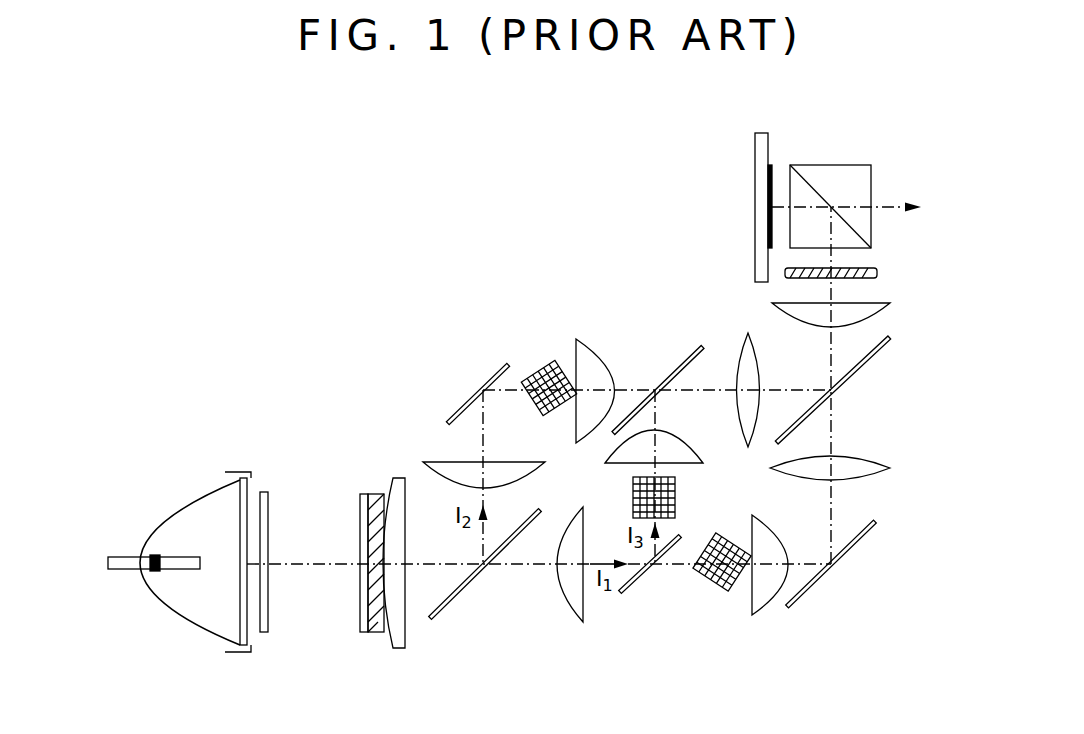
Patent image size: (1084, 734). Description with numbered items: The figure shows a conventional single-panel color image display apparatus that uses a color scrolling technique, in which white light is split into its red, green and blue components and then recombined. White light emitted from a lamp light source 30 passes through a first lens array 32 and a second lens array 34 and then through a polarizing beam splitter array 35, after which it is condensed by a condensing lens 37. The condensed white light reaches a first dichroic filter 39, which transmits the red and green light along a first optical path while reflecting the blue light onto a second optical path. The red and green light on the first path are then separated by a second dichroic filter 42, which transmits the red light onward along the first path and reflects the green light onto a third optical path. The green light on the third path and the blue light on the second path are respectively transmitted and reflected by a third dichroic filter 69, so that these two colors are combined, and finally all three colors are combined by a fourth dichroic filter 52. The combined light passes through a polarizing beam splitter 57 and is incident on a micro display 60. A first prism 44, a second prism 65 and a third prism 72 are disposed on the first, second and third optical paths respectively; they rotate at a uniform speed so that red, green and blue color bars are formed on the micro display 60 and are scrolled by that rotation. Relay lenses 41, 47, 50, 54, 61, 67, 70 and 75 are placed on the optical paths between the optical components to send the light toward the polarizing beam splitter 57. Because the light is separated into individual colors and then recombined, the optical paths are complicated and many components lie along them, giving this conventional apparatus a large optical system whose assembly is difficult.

The lamp light source 30 is at (191, 514).
The first lens array 32 is at (263, 520).
The second lens array 34 is at (362, 630).
The polarizing beam splitter array 35 is at (377, 633).
The condensing lens 37 is at (400, 628).
The first dichroic filter 39 is at (462, 590).
The relay lens 41 is at (575, 612).
The second dichroic filter 42 is at (643, 580).
The first prism 44 is at (720, 590).
The relay lens 47 is at (762, 598).
The relay lens 50 is at (890, 468).
The fourth dichroic filter 52 is at (855, 375).
The relay lens 54 is at (890, 307).
The polarizing beam splitter 57 is at (830, 165).
The micro display 60 is at (755, 207).
The relay lens 61 is at (432, 462).
The second prism 65 is at (545, 370).
The relay lens 67 is at (582, 345).
The third dichroic filter 69 is at (672, 370).
The relay lens 70 is at (745, 338).
The third prism 72 is at (633, 495).
The relay lens 75 is at (690, 460).